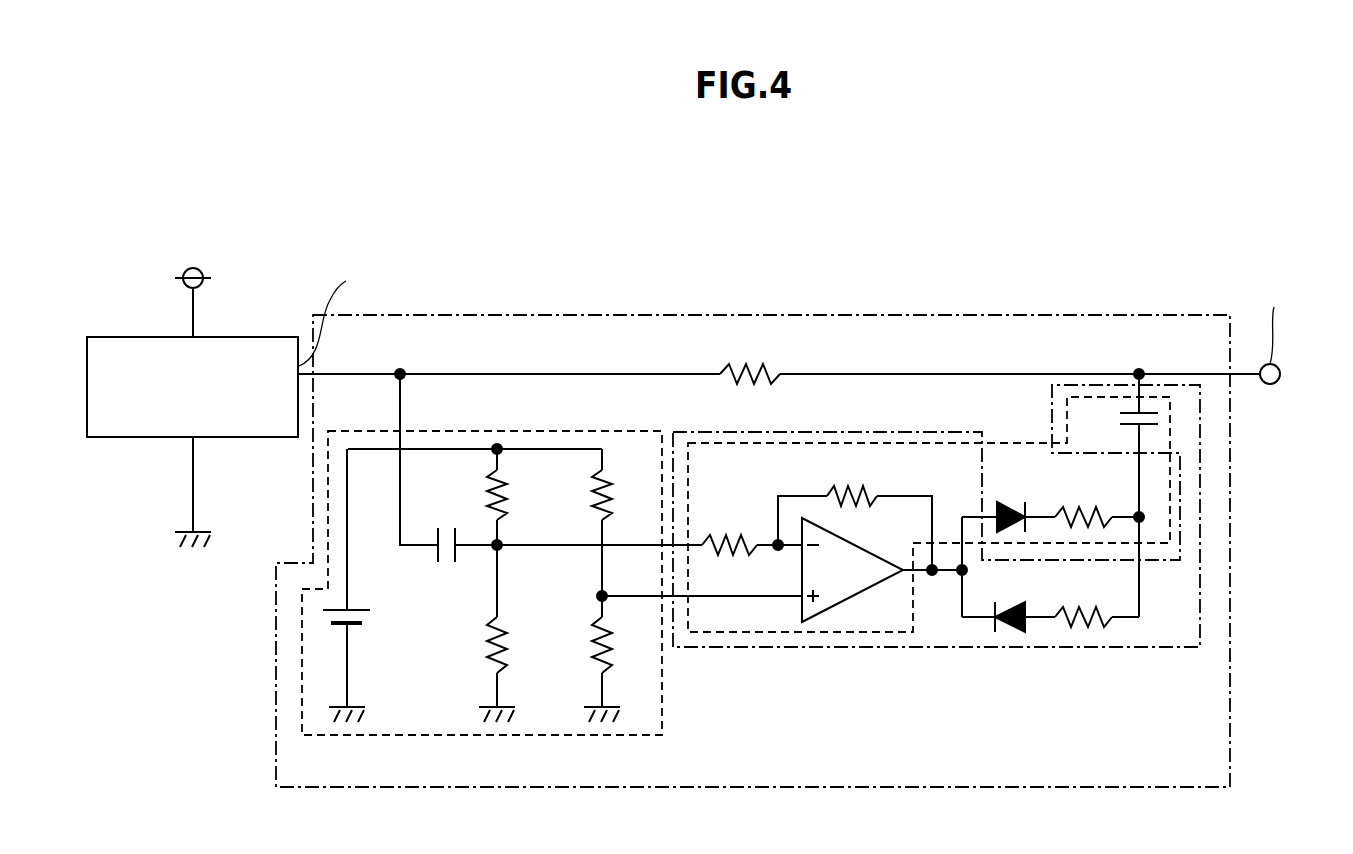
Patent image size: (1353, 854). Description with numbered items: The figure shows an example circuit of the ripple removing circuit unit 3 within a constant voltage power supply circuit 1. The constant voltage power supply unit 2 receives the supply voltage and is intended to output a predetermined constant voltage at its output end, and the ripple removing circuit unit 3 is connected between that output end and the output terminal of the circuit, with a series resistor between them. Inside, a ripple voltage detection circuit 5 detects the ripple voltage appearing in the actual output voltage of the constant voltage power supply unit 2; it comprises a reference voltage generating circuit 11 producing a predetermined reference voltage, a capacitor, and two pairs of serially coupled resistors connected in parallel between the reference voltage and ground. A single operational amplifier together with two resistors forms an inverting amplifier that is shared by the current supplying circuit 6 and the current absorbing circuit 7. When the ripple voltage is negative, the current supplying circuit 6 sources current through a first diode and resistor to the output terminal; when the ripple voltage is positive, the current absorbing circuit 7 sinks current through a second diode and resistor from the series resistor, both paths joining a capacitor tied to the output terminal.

The constant voltage power supply circuit 1 is at (815, 252).
The constant voltage power supply unit 2 is at (123, 437).
The ripple removing circuit unit 3 is at (956, 313).
The ripple voltage detection circuit 5 is at (568, 430).
The current supplying circuit 6 is at (918, 613).
The current absorbing circuit 7 is at (1093, 651).
The reference voltage generating circuit 11 is at (362, 618).